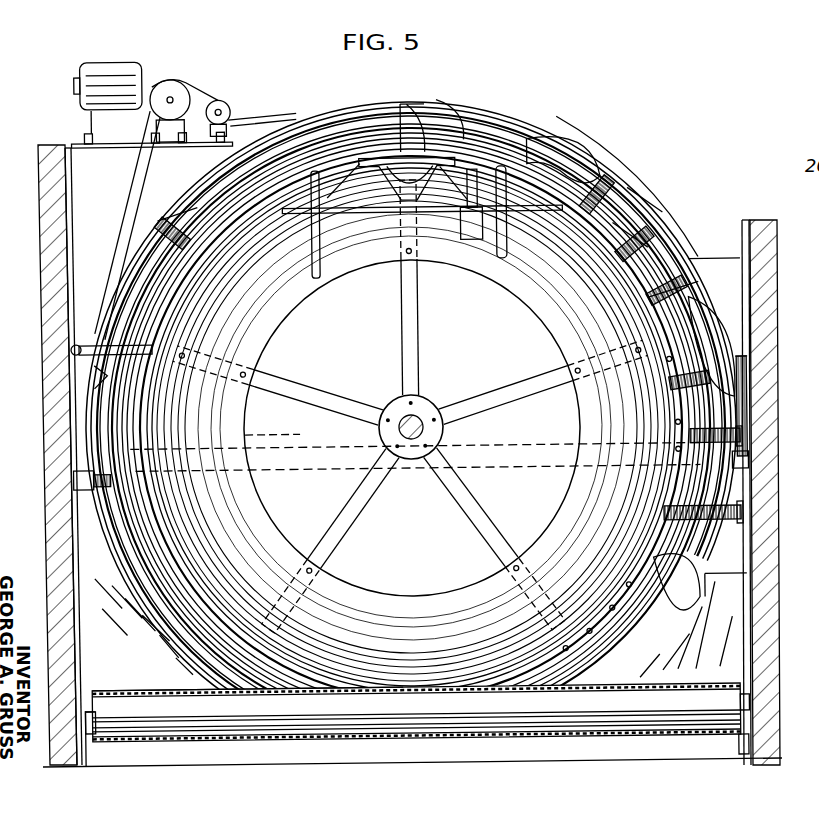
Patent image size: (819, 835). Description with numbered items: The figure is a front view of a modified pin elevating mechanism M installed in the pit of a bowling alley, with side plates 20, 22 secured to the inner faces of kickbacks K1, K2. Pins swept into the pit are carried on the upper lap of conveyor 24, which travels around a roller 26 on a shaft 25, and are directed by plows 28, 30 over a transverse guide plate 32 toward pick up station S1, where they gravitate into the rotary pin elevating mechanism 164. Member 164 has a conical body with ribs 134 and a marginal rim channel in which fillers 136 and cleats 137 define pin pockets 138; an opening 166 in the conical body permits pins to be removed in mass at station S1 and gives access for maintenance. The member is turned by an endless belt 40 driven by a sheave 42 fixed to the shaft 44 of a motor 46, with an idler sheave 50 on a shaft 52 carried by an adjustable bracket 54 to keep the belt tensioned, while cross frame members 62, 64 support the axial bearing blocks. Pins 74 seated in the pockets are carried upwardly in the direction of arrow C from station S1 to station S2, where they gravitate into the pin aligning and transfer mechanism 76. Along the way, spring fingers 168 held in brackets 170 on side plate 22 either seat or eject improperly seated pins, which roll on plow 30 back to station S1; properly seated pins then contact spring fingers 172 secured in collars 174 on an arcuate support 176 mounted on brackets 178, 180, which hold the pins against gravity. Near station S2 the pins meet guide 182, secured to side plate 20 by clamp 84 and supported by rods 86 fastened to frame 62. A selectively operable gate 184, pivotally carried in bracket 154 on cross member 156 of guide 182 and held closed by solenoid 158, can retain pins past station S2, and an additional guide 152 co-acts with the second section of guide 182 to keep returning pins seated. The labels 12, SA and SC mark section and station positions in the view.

The side plate 20 is at (72, 221).
The side plate 22 is at (744, 226).
The conveyor 24 is at (462, 730).
The shaft 25 is at (745, 706).
The roller 26 is at (386, 714).
The plow 28 is at (157, 690).
The plow 30 is at (733, 578).
The guide plate 32 is at (600, 745).
The endless belt 40 is at (116, 241).
The sheave 42 is at (170, 90).
The shaft 44 is at (178, 98).
The motor 46 is at (190, 69).
The idler sheave 50 is at (226, 99).
The shaft 52 is at (230, 111).
The bracket 54 is at (152, 141).
The cross frame member 62 is at (78, 478).
The cross frame member 64 is at (318, 453).
The bowling pin 74 is at (430, 135).
The pin aligning and transfer mechanism 76 is at (390, 192).
The clamp 84 is at (78, 328).
The rod 86 is at (312, 245).
The rib 134 is at (343, 406).
The filler 136 is at (338, 140).
The cleat 137 is at (260, 143).
The pin pocket 138 is at (202, 197).
The additional guide 152 is at (193, 218).
The bracket 154 is at (326, 211).
The cross member 156 is at (517, 209).
The solenoid 158 is at (464, 222).
The pin elevating mechanism 164 is at (590, 135).
The opening 166 is at (245, 433).
The spring finger 168 is at (690, 437).
The bracket 170 is at (742, 437).
The spring finger 172 is at (620, 260).
The collar 174 is at (617, 203).
The support 176 is at (621, 222).
The bracket 178 is at (750, 367).
The bracket 180 is at (705, 262).
The guide 182 is at (543, 185).
The gate 184 is at (392, 157).
The kickback K1 is at (55, 223).
The kickback K2 is at (762, 230).
The pin elevating mechanism M is at (499, 62).
The section line 12 is at (487, 71).
The arrow C is at (495, 266).
The pick up station S1 is at (388, 680).
The station S2 is at (390, 232).
The station A SA is at (116, 676).
The station C SC is at (714, 658).